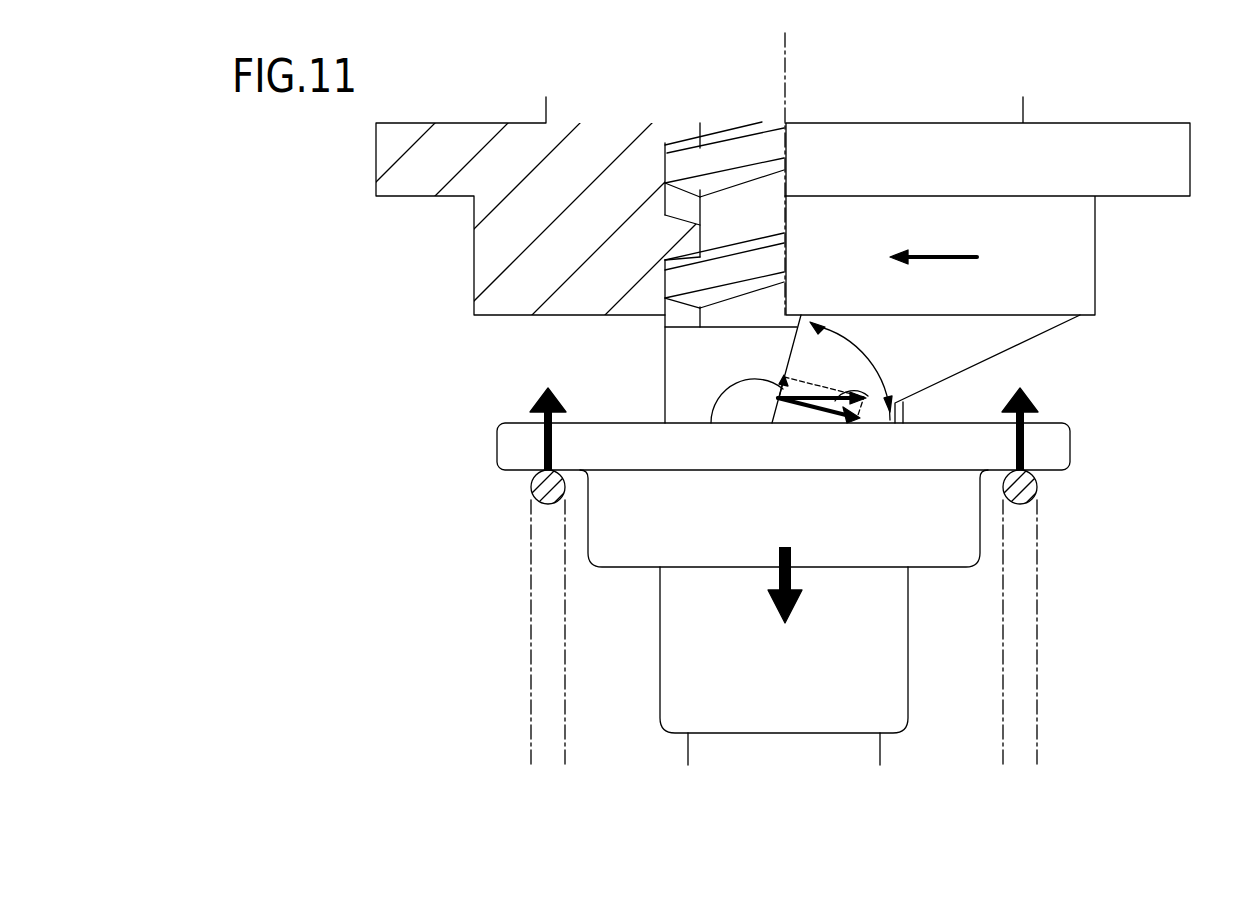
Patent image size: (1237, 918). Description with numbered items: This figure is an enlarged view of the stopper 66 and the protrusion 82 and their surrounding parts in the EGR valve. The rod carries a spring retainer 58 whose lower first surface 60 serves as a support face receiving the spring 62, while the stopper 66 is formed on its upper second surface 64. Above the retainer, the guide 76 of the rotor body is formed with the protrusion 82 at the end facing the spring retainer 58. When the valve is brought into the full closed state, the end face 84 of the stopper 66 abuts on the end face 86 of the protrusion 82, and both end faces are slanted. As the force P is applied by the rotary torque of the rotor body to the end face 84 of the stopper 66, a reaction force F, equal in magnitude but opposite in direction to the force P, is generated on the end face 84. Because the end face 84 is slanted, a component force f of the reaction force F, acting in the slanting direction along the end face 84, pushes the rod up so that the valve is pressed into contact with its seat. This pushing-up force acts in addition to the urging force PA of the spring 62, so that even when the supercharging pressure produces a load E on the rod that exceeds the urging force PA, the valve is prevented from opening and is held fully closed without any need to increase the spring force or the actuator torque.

The spring retainer 58 is at (1060, 442).
The first surface 60 is at (993, 475).
The spring 62 is at (1040, 485).
The second surface 64 is at (962, 421).
The stopper 66 is at (727, 407).
The guide 76 is at (1057, 256).
The protrusion 82 is at (1022, 333).
The end face of the stopper 84 is at (788, 427).
The end face of the protrusion 86 is at (793, 347).
The force P is at (953, 258).
The urging force PA is at (530, 400).
The reaction force F is at (872, 420).
The component force f is at (780, 390).
The load E is at (797, 600).